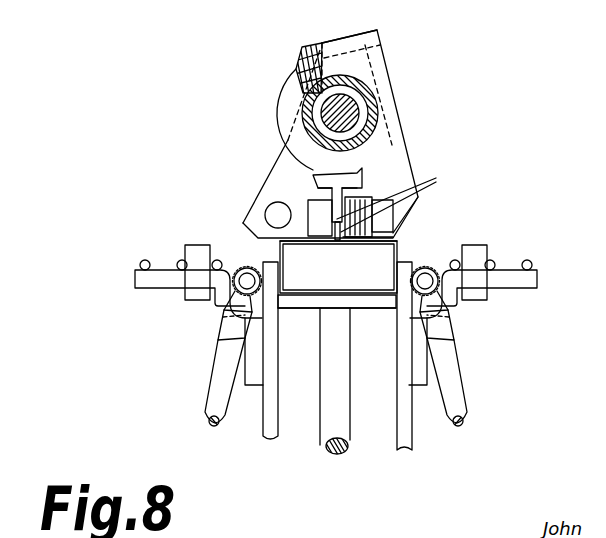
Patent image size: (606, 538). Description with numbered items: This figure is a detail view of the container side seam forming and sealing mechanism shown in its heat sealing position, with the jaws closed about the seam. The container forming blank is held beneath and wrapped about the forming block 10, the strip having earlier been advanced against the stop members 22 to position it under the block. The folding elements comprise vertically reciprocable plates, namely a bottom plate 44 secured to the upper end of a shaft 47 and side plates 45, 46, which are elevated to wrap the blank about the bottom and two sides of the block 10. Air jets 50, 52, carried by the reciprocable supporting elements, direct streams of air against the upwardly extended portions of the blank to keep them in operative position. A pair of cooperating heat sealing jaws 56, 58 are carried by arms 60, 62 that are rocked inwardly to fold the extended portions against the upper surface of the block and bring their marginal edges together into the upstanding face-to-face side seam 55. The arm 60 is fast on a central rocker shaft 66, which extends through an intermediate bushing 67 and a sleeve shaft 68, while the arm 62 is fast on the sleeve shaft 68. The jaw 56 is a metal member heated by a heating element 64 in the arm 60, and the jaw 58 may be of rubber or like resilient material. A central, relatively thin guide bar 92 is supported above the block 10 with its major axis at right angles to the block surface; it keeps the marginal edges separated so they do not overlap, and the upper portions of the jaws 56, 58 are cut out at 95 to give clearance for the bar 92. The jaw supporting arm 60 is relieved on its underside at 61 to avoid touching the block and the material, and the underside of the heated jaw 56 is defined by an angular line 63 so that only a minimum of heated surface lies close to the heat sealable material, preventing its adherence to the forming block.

The forming block 10 is at (396, 244).
The stop members 22 is at (192, 244).
The bottom plate 44 is at (377, 298).
The side plate 45 is at (263, 363).
The side plate 46 is at (403, 430).
The shaft 47 is at (320, 420).
The air jet 50 is at (242, 267).
The air jet 52 is at (430, 267).
The face-to-face side seam 55 is at (402, 196).
The heat sealing jaw 56 is at (338, 241).
The heat sealing jaw 58 is at (348, 239).
The arm 60 is at (267, 185).
The relieved underside 61 is at (282, 247).
The arm 62 is at (395, 115).
The angular line 63 is at (337, 239).
The heating element 64 is at (265, 205).
The central rocker shaft 66 is at (305, 97).
The intermediate bushing 67 is at (365, 122).
The sleeve shaft 68 is at (368, 83).
The guide bar 92 is at (350, 172).
The cut out 95 is at (315, 203).